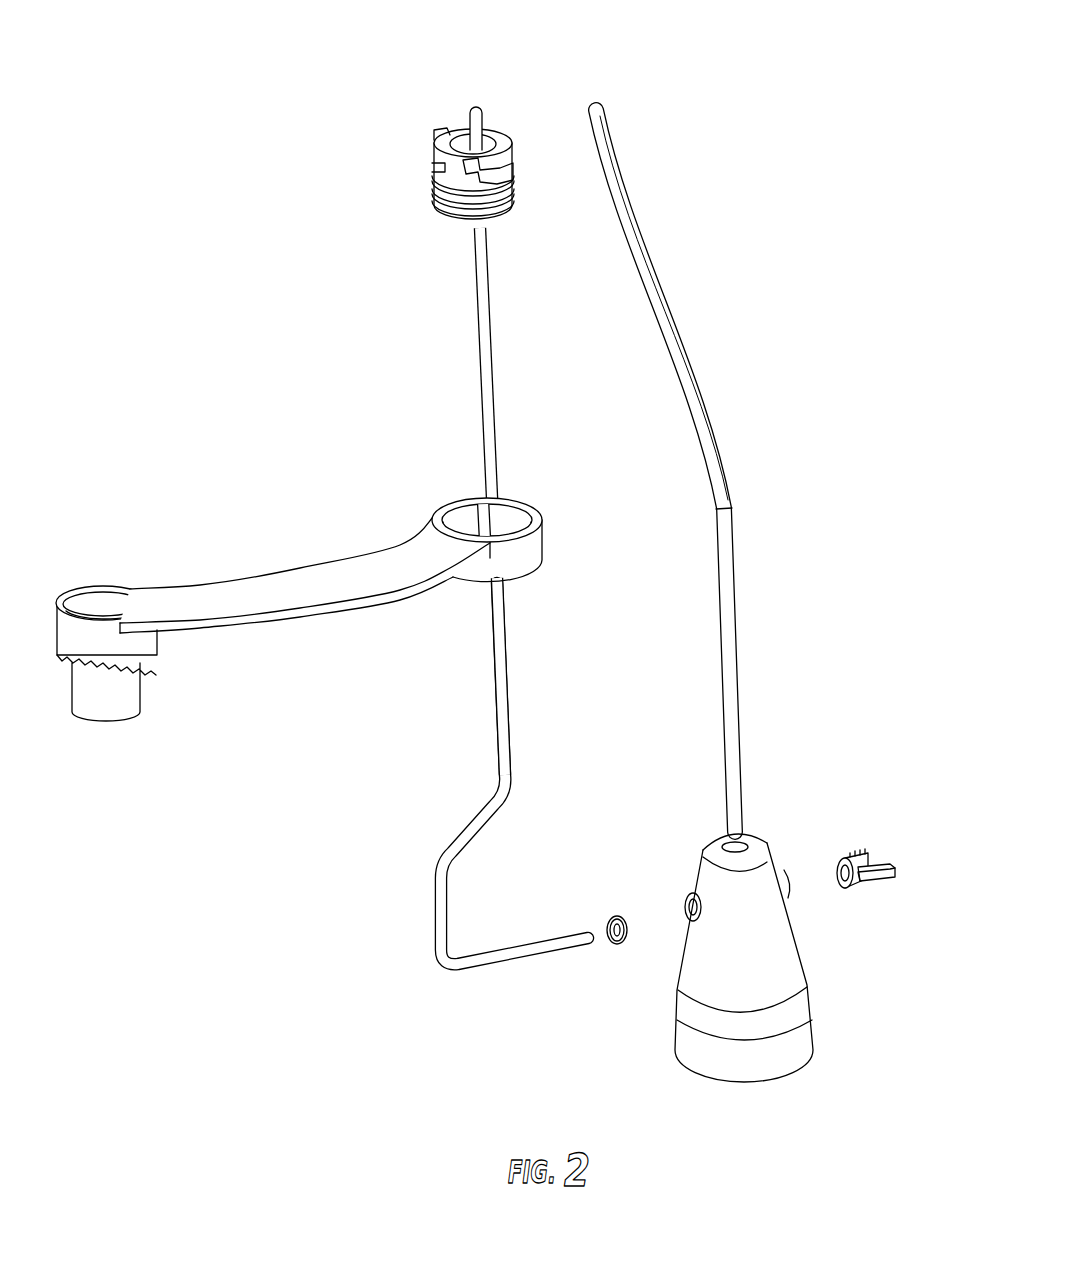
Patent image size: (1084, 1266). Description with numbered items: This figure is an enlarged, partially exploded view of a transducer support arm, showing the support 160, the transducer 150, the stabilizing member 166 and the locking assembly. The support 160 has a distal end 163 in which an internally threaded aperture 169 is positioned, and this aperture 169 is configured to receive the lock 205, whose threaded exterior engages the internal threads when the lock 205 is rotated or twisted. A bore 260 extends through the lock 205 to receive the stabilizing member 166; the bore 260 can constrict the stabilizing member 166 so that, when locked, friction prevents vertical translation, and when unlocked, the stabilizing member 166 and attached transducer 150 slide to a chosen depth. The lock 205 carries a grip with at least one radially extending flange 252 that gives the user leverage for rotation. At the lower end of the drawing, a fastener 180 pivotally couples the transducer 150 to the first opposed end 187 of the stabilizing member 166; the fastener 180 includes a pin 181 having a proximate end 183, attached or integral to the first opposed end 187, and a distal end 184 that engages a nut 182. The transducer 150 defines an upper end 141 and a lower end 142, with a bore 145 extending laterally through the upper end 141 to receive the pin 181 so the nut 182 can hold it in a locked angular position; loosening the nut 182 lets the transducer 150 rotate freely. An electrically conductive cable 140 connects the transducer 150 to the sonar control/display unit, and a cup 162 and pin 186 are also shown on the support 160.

The electrically conductive cable 140 is at (728, 580).
The upper end 141 is at (772, 850).
The lower end 142 is at (790, 1060).
The bore 145 is at (790, 878).
The transducer 150 is at (713, 1007).
The support 160 is at (208, 592).
The cup 162 is at (120, 590).
The distal end 163 is at (452, 500).
The stabilizing member 166 is at (483, 323).
The internally threaded aperture 169 is at (510, 520).
The fastener 180 is at (578, 928).
The pin 181 is at (517, 958).
The nut 182 is at (860, 886).
The proximate end 183 is at (450, 972).
The distal end 184 is at (595, 942).
The pin 186 is at (477, 110).
The first opposed end 187 is at (435, 928).
The lock 205 is at (508, 146).
The radially extending flange 252 is at (448, 128).
The bore 260 is at (490, 220).